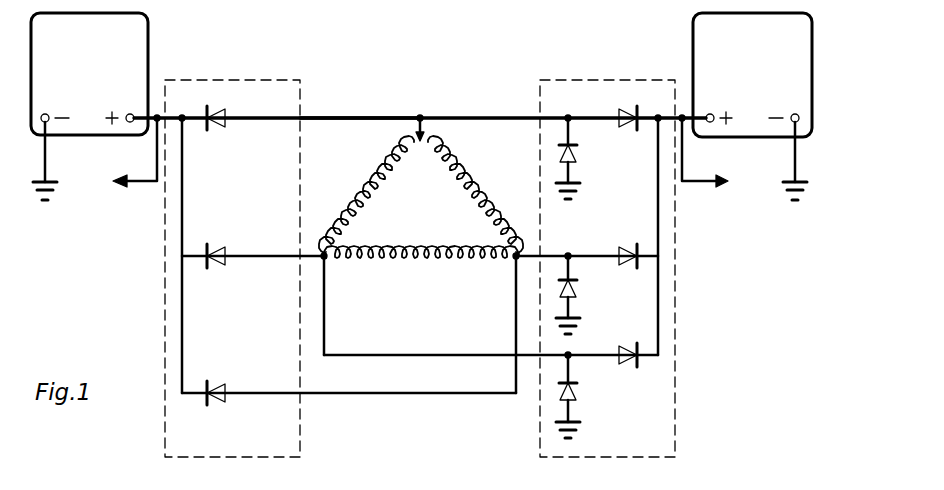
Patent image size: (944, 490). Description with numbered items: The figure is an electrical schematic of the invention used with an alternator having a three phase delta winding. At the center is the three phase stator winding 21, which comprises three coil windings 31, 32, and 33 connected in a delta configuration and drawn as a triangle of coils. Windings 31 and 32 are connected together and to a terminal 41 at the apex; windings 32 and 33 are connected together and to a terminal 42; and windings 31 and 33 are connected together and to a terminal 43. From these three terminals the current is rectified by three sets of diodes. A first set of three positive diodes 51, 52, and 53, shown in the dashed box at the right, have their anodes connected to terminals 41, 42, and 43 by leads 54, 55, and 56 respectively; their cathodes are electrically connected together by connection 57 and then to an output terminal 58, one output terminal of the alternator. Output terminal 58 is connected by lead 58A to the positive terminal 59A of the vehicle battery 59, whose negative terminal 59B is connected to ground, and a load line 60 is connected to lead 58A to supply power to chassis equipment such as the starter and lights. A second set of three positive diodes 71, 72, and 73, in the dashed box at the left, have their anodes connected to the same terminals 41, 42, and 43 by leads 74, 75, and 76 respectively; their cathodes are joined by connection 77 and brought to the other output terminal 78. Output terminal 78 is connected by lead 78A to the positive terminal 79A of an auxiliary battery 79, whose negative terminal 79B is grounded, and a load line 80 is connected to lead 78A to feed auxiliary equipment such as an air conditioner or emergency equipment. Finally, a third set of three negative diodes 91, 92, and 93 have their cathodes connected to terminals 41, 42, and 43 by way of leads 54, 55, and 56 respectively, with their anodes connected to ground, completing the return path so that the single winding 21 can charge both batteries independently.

The three phase stator winding 21 is at (421, 227).
The coil winding 31 is at (368, 186).
The coil winding 32 is at (467, 186).
The coil winding 33 is at (403, 267).
The terminal 41 is at (421, 138).
The terminal 42 is at (518, 266).
The terminal 43 is at (320, 262).
The positive diode 51 is at (615, 103).
The positive diode 52 is at (632, 248).
The positive diode 53 is at (632, 364).
The lead 54 is at (458, 116).
The lead 55 is at (595, 254).
The lead 56 is at (432, 354).
The connection 57 is at (660, 222).
The output terminal 58 is at (672, 115).
The lead 58A is at (712, 114).
The vehicle battery 59 is at (693, 35).
The positive terminal 59A is at (716, 110).
The negative terminal 59B is at (793, 113).
The load line 60 is at (727, 188).
The positive diode 71 is at (226, 112).
The positive diode 72 is at (216, 401).
The positive diode 73 is at (227, 263).
The lead 74 is at (370, 116).
The lead 75 is at (428, 396).
The lead 76 is at (280, 254).
The connection 77 is at (182, 218).
The output terminal 78 is at (167, 114).
The lead 78A is at (137, 114).
The auxiliary battery 79 is at (148, 35).
The positive terminal 79A is at (134, 110).
The negative terminal 79B is at (60, 108).
The load line 80 is at (124, 184).
The negative diode 91 is at (578, 140).
The negative diode 92 is at (574, 298).
The negative diode 93 is at (575, 414).